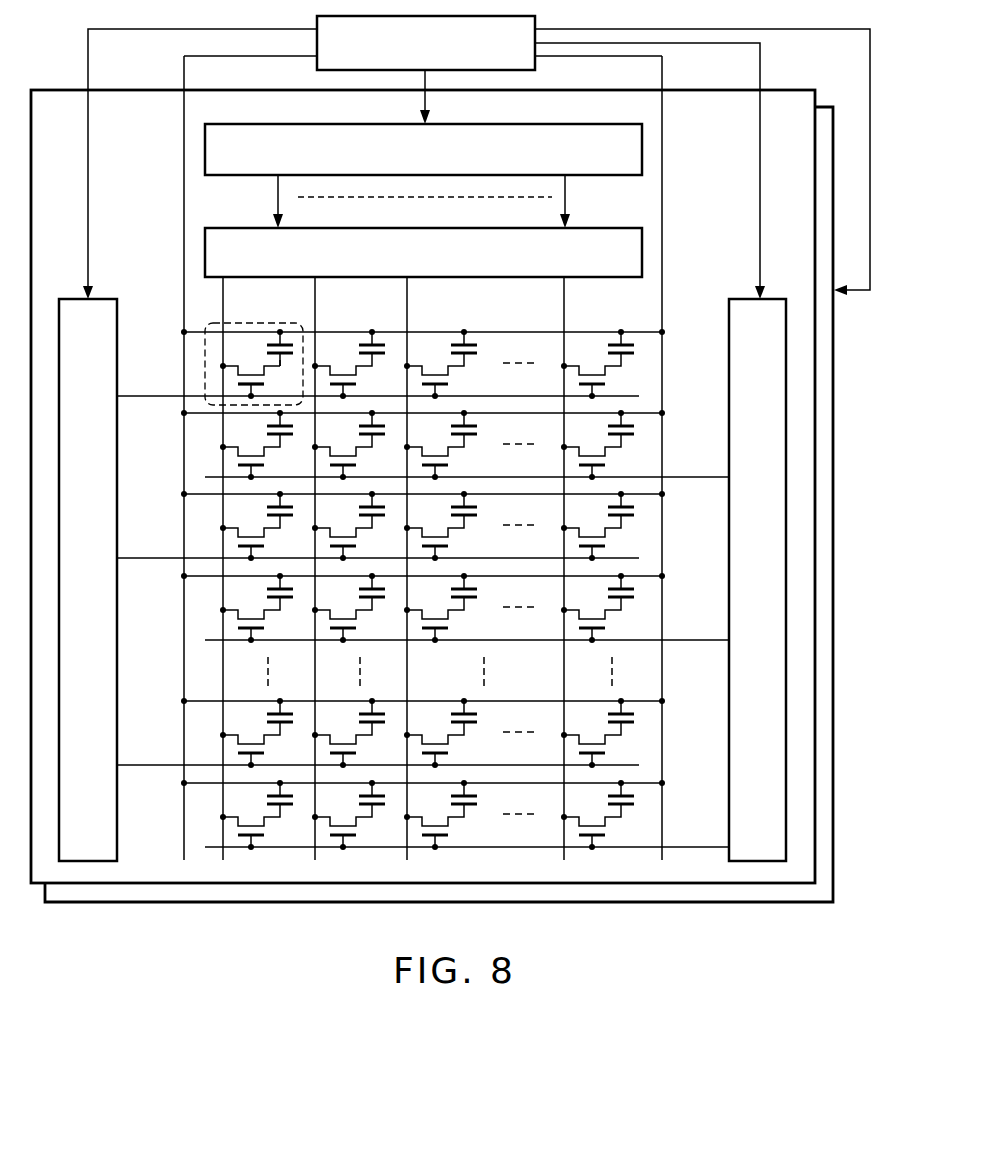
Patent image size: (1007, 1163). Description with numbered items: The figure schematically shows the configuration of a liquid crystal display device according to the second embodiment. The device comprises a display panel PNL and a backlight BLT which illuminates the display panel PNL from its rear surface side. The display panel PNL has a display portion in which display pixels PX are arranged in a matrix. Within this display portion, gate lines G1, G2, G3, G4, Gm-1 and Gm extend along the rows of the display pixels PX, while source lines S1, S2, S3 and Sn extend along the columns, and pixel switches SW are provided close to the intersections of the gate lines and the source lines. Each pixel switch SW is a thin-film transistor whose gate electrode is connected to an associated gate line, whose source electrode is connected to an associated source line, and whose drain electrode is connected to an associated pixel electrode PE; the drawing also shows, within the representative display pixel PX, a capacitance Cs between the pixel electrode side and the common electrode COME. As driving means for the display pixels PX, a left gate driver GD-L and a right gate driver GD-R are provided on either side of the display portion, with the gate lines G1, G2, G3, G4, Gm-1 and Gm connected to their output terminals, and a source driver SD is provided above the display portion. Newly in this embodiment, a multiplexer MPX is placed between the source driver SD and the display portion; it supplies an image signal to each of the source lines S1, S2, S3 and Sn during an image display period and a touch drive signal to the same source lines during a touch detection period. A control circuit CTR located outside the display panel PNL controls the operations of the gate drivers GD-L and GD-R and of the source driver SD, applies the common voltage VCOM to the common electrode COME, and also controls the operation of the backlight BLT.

The display panel PNL is at (795, 89).
The backlight BLT is at (838, 120).
The control circuit CTR is at (476, 157).
The common voltage VCOM is at (423, 70).
The source driver SD is at (423, 176).
The multiplexer MPX is at (423, 252).
The left gate driver GD-L is at (88, 580).
The right gate driver GD-R is at (757, 580).
The source line S1 is at (240, 568).
The source line S2 is at (331, 568).
The source line S3 is at (424, 568).
The source line Sn is at (580, 568).
The gate line G1 is at (378, 383).
The gate line G2 is at (467, 465).
The gate line G3 is at (378, 545).
The gate line G4 is at (467, 628).
The gate line Gm-1 is at (378, 753).
The gate line Gm is at (467, 835).
The common electrode COME is at (283, 333).
The display pixel PX is at (220, 345).
The pixel switch SW is at (232, 380).
The storage capacitor Cs is at (259, 347).
The pixel electrode PE is at (284, 361).